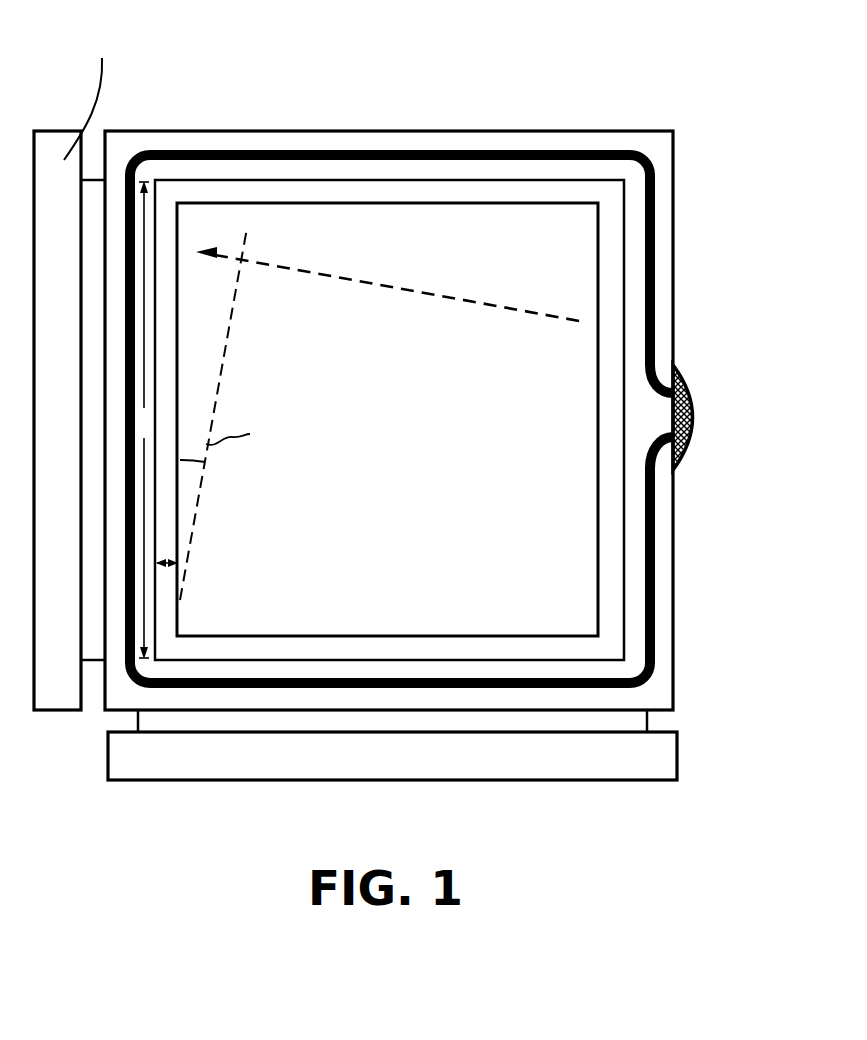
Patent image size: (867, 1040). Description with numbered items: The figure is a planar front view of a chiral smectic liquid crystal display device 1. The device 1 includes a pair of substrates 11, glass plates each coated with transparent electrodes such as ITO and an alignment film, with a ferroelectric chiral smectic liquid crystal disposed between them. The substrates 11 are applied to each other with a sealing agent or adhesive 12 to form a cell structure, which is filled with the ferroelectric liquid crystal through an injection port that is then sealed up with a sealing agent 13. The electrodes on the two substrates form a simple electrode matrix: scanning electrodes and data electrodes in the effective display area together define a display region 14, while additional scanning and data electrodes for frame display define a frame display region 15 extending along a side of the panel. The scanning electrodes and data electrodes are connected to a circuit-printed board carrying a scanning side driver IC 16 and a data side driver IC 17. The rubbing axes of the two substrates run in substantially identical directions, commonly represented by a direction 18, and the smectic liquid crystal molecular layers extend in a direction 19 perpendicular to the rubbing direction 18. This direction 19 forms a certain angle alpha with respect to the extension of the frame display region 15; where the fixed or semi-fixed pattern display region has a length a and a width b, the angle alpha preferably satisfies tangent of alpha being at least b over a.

The liquid crystal display device 1 is at (387, 129).
The substrates 11 is at (662, 158).
The sealing agent 12 is at (654, 243).
The sealing agent 13 is at (690, 392).
The display region 14 is at (577, 498).
The frame display region 15 is at (618, 570).
The scanning side driver IC 16 is at (677, 752).
The data side driver IC 17 is at (62, 128).
The rubbing direction 18 is at (438, 295).
The smectic layer extension direction 19 is at (222, 365).